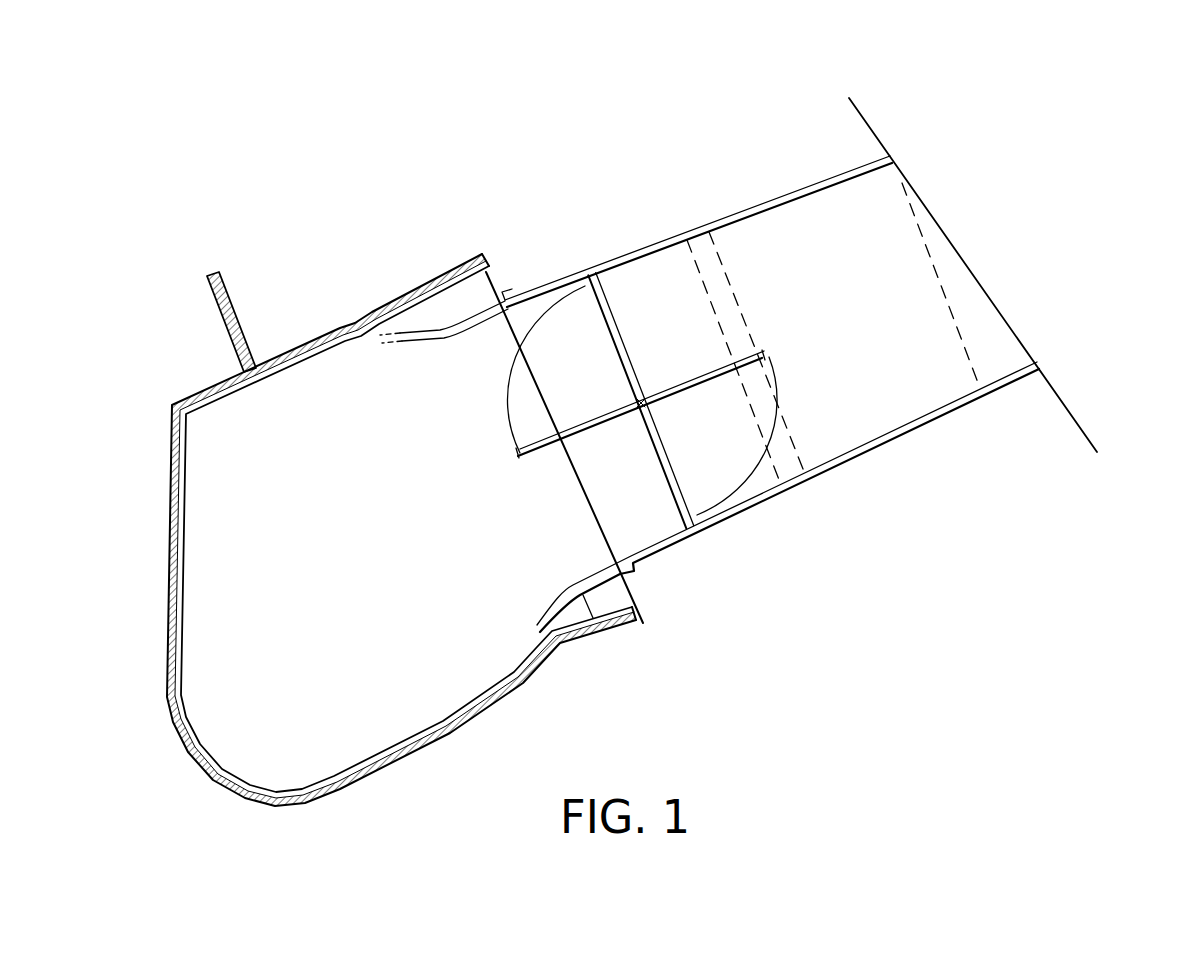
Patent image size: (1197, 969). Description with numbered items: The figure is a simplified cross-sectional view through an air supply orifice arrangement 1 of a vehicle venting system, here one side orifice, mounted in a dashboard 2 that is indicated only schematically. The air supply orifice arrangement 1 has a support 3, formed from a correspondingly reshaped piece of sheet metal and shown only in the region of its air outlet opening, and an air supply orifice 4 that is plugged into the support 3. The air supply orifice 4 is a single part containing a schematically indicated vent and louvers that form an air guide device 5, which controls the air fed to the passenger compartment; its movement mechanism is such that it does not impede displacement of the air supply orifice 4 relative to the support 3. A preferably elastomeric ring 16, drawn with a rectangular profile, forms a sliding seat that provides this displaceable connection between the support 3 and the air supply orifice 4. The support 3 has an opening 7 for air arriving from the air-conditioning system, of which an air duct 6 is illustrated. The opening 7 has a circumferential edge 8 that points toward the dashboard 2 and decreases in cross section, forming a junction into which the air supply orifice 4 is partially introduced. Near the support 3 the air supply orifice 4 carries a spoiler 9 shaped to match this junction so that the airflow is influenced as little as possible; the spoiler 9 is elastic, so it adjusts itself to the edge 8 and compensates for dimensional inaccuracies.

The air supply orifice arrangement 1 is at (424, 182).
The dashboard 2 is at (1067, 410).
The support 3 is at (286, 305).
The air supply orifice 4 is at (704, 178).
The air guide device 5 is at (862, 549).
The air duct 6 is at (298, 623).
The opening 7 is at (350, 566).
The circumferential edge 8 is at (468, 250).
The spoiler 9 is at (580, 637).
The ring 16 is at (482, 274).